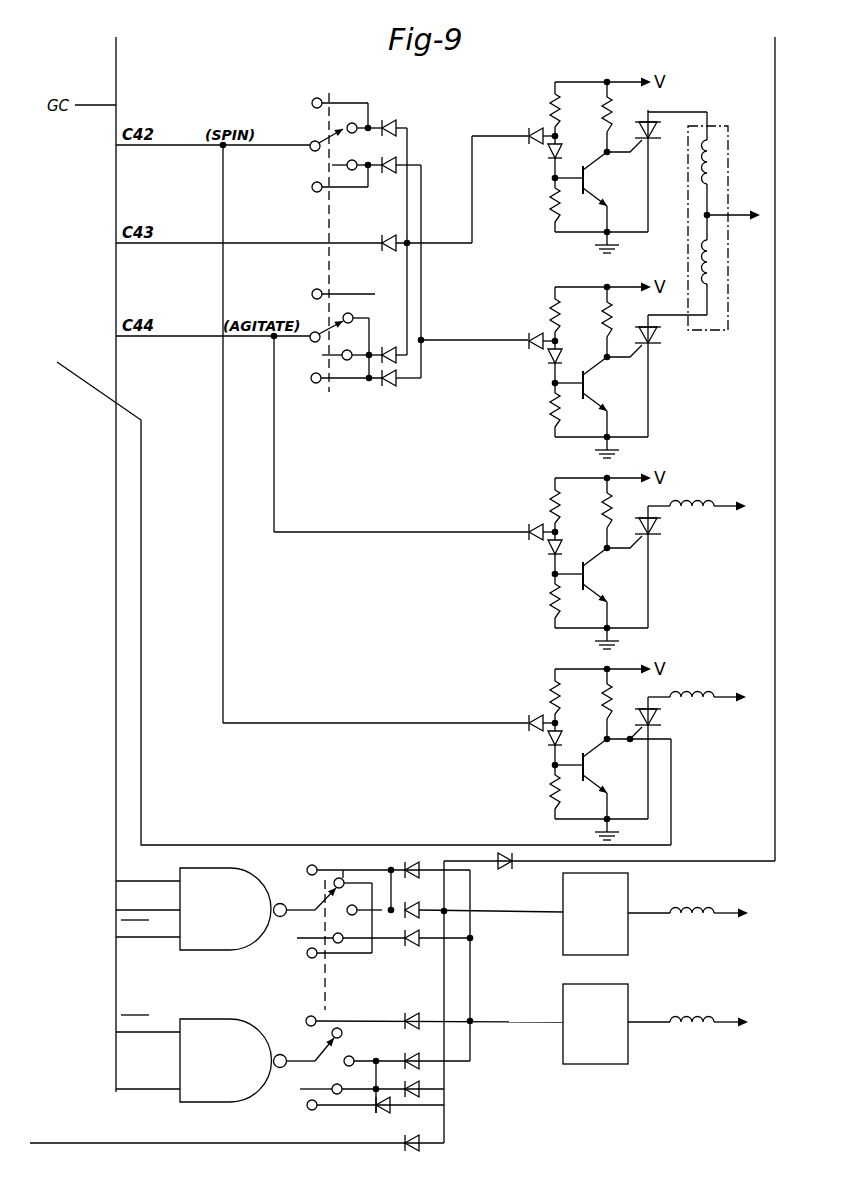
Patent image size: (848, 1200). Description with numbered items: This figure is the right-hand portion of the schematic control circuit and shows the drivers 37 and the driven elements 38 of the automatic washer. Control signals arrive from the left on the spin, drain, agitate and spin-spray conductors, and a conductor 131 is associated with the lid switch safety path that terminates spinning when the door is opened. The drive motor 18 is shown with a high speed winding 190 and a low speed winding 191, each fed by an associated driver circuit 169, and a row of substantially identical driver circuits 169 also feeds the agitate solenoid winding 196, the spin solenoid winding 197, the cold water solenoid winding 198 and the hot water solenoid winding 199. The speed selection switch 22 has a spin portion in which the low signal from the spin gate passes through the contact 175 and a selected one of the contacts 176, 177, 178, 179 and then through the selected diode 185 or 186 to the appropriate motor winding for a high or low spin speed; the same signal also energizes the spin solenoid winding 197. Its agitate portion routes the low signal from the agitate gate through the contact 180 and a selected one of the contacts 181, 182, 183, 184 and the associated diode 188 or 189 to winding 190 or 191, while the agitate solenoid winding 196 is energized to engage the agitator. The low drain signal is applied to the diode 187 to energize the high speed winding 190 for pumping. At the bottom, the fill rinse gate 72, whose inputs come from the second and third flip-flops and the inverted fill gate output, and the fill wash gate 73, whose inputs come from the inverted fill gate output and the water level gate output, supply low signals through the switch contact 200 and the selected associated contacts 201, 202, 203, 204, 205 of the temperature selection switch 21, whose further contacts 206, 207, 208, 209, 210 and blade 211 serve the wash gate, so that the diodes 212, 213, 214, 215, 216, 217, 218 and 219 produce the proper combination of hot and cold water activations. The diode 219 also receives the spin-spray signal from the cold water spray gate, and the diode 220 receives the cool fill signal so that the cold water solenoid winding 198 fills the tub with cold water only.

The drive motor 18 is at (730, 160).
The temperature selection switch 21 is at (326, 983).
The speed selection switch 22 is at (347, 402).
The driver 37 is at (598, 1070).
The driven elements 38 is at (714, 118).
The fill rinse gate 72 is at (201, 907).
The fill wash gate 73 is at (201, 1058).
The conductor 131 is at (82, 366).
The driver circuit 169 is at (600, 589).
The contact 175 is at (314, 141).
The contact 176 is at (313, 101).
The contact 177 is at (353, 122).
The contact 178 is at (337, 166).
The contact 179 is at (314, 191).
The contact 180 is at (314, 332).
The contact 181 is at (313, 291).
The contact 182 is at (350, 313).
The contact 183 is at (332, 355).
The contact 184 is at (313, 383).
The diode 185 is at (399, 126).
The diode 186 is at (399, 163).
The diode 187 is at (392, 237).
The diode 188 is at (399, 358).
The diode 189 is at (399, 381).
The high speed winding 190 is at (712, 180).
The low speed winding 191 is at (712, 268).
The agitate solenoid winding 196 is at (692, 502).
The spin solenoid winding 197 is at (690, 693).
The cold water solenoid winding 198 is at (698, 908).
The hot water solenoid winding 199 is at (710, 1027).
The switch contact 200 is at (320, 906).
The contact 201 is at (310, 866).
The contact 202 is at (344, 902).
The contact 203 is at (346, 913).
The contact 204 is at (333, 943).
The contact 205 is at (317, 957).
The switch contact 206 is at (311, 1016).
The switch contact 207 is at (342, 1034).
The switch contact 208 is at (349, 1066).
The switch contact 209 is at (358, 1087).
The switch contact 210 is at (310, 1109).
The temperature switch blade 211 is at (316, 1056).
The diode 212 is at (413, 864).
The diode 213 is at (480, 902).
The diode 214 is at (414, 947).
The diode 215 is at (412, 1016).
The diode 216 is at (420, 1050).
The diode 217 is at (420, 1087).
The diode 218 is at (380, 1112).
The diode 219 is at (414, 1137).
The diode 220 is at (498, 868).